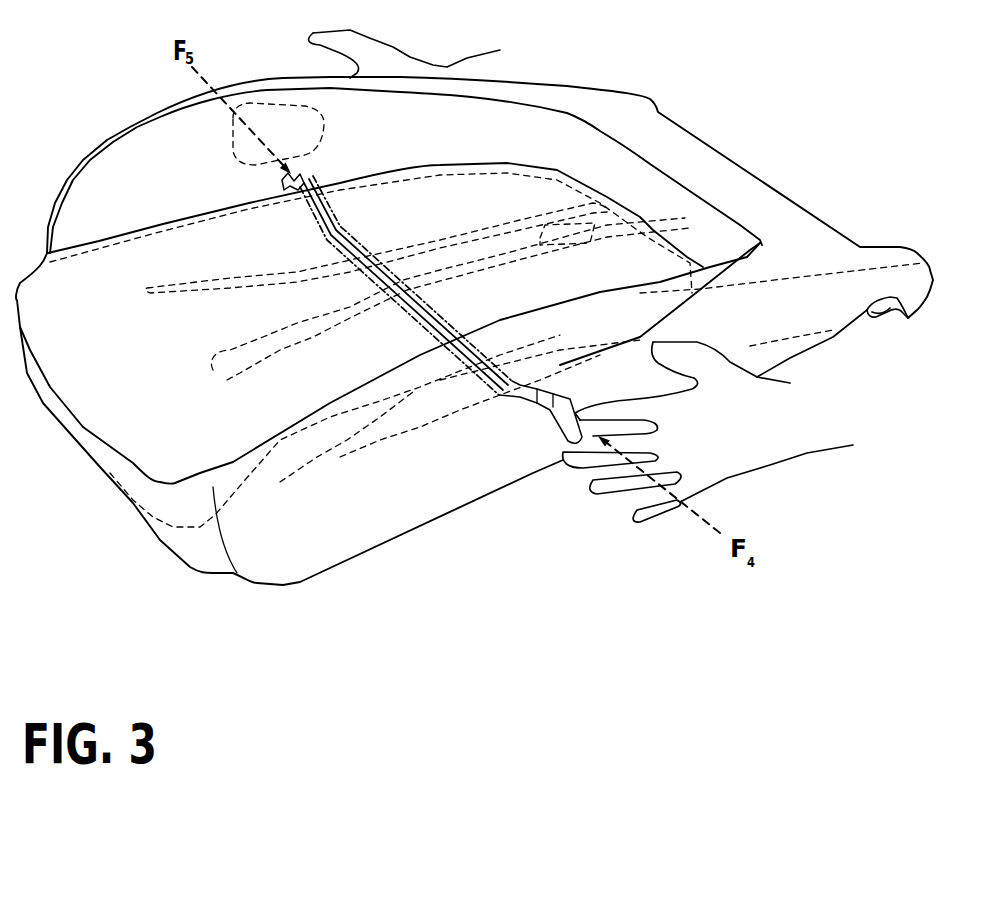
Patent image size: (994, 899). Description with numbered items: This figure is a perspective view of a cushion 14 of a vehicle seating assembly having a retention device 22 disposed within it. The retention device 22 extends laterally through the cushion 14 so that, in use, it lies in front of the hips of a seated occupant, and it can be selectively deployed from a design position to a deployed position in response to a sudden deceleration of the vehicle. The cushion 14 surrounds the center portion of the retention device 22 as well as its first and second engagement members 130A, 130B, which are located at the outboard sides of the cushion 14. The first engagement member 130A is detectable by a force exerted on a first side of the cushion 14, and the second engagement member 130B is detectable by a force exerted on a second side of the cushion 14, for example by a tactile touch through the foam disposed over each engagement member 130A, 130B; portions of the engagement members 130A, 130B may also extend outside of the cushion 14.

The cushion 14 is at (298, 512).
The retention device 22 is at (397, 278).
The first engagement member 130A is at (290, 182).
The second engagement member 130B is at (565, 410).